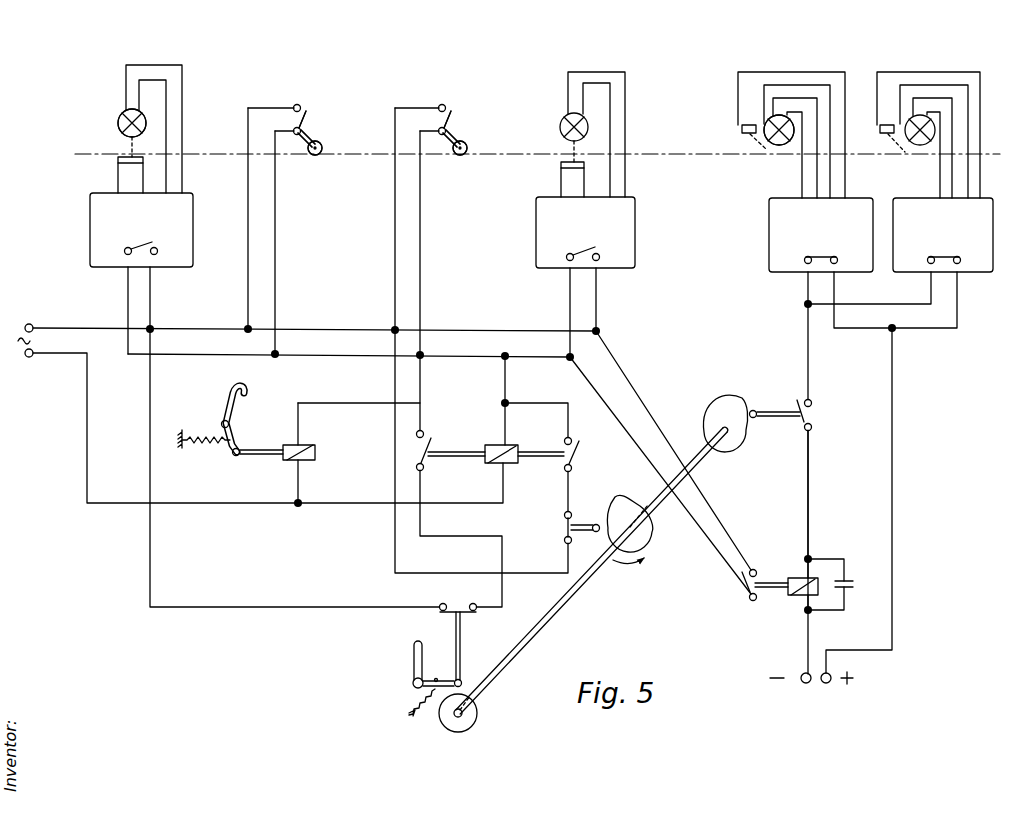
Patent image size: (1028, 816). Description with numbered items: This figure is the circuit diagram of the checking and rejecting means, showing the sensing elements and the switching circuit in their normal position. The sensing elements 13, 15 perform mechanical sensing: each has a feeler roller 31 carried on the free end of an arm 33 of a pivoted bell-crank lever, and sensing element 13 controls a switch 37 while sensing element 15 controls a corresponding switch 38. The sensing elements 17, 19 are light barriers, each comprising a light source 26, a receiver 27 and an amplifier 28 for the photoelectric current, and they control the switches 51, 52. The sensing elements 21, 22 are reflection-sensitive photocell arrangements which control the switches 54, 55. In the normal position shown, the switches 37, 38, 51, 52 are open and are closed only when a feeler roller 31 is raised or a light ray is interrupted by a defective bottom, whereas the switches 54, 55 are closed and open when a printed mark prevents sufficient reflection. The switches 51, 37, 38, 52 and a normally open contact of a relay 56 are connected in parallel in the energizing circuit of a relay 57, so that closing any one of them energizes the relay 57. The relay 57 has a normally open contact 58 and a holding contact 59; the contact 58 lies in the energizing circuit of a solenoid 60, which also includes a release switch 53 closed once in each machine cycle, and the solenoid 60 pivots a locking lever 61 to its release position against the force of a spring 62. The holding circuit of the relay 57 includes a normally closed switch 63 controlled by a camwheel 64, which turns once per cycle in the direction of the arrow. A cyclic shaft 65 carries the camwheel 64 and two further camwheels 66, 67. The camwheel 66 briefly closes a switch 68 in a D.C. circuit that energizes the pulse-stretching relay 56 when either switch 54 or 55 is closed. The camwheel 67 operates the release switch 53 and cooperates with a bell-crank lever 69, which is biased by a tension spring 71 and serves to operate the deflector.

The sensing element 13 is at (309, 129).
The sensing element 15 is at (454, 129).
The sensing element 17 is at (117, 114).
The sensing element 19 is at (562, 112).
The sensing element 21 is at (775, 148).
The sensing element 22 is at (917, 150).
The light source 26 is at (116, 123).
The receiver 27 is at (118, 160).
The amplifier 28 is at (100, 207).
The feeler roller 31 is at (318, 155).
The arm 33 is at (303, 150).
The switch 37 is at (302, 107).
The switch 38 is at (448, 107).
The switch 51 is at (142, 241).
The switch 52 is at (587, 246).
The release switch 53 is at (470, 615).
The switch 54 is at (822, 255).
The switch 55 is at (948, 255).
The relay 56 is at (792, 589).
The relay 57 is at (493, 458).
The normally open contact 58 is at (428, 443).
The holding contact 59 is at (581, 448).
The solenoid 60 is at (315, 457).
The locking lever 61 is at (227, 407).
The spring 62 is at (200, 437).
The normally closed switch 63 is at (565, 535).
The camwheel 64 is at (622, 517).
The cyclic shaft 65 is at (658, 504).
The camwheel 66 is at (733, 438).
The camwheel 67 is at (449, 719).
The switch 68 is at (812, 417).
The bell-crank lever 69 is at (413, 664).
The tension spring 71 is at (415, 706).